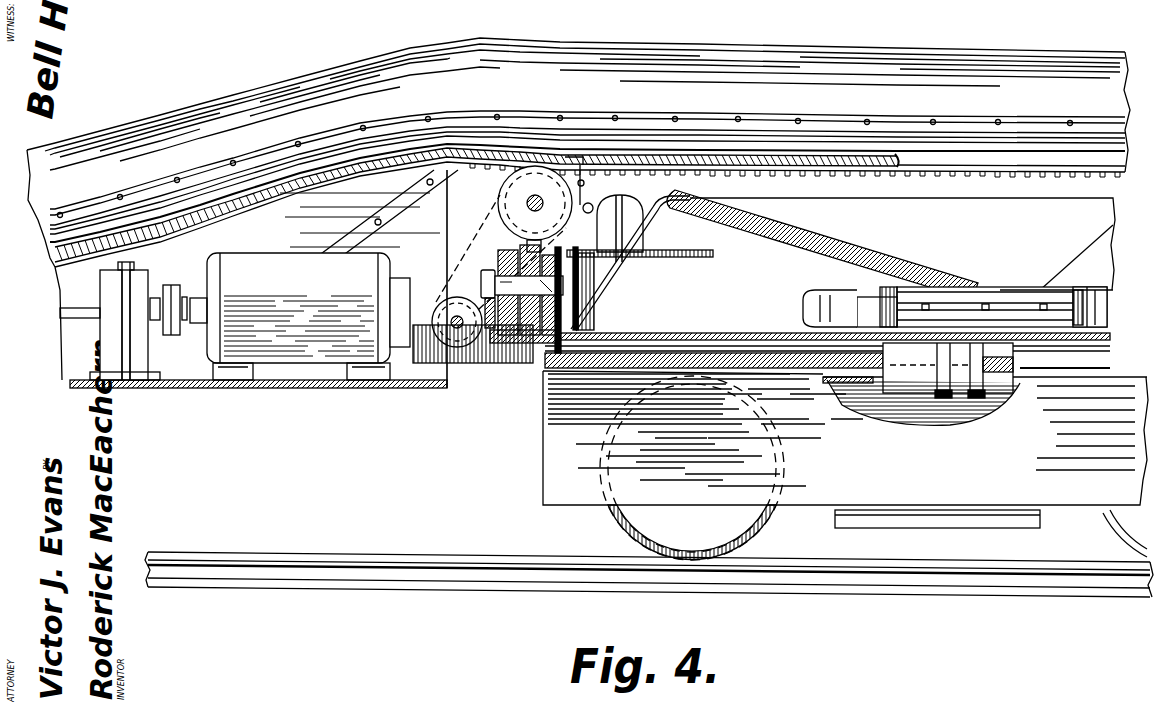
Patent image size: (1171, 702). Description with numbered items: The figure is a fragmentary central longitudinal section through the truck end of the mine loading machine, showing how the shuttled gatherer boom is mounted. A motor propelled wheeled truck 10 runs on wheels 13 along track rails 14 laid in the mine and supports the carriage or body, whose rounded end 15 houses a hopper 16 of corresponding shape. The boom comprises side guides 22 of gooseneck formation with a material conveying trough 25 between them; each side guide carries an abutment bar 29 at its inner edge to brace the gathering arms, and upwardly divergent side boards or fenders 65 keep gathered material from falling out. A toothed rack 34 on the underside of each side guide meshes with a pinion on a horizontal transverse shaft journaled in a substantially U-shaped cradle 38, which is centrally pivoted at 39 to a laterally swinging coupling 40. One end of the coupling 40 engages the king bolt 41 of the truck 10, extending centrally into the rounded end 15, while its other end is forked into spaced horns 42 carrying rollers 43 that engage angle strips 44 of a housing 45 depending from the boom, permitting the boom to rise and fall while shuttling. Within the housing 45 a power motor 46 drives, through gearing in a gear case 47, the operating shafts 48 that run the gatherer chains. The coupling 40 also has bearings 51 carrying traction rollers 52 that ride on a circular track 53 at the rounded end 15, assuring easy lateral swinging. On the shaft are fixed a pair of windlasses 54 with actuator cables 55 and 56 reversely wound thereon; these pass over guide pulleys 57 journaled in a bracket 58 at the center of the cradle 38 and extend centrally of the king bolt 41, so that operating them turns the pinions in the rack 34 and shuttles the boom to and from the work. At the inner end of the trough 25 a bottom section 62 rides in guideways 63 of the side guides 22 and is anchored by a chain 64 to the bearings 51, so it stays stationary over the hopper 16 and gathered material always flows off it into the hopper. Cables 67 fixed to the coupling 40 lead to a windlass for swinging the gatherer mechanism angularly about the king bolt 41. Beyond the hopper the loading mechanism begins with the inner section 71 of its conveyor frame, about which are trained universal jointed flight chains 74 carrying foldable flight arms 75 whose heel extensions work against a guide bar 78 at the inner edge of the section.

The wheeled truck 10 is at (545, 505).
The wheels 13 is at (765, 525).
The track rails 14 is at (335, 550).
The rounded end 15 is at (547, 353).
The hopper 16 is at (790, 200).
The side guides 22 is at (718, 128).
The material conveying trough 25 is at (140, 233).
The abutment bar 29 is at (605, 118).
The toothed rack 34 is at (908, 175).
The cradle 38 is at (527, 243).
The pivot 39 is at (487, 282).
The coupling 40 is at (667, 353).
The king bolt 41 is at (1015, 368).
The horns 42 is at (413, 362).
The rollers 43 is at (287, 382).
The angle strips 44 is at (365, 236).
The housing 45 is at (187, 388).
The power motor 46 is at (256, 265).
The gear case 47 is at (107, 288).
The operating shafts 48 is at (65, 318).
The bearings 51 is at (597, 233).
The traction rollers 52 is at (627, 205).
The circular track 53 is at (662, 252).
The windlasses 54 is at (498, 190).
The actuator cable 55 is at (1112, 340).
The actuator cable 56 is at (1103, 350).
The guide pulleys 57 is at (458, 340).
The bracket 58 is at (490, 330).
The bottom section 62 is at (378, 163).
The guideways 63 is at (918, 165).
The chain 64 is at (588, 200).
The side boards or fenders 65 is at (750, 52).
The cables 67 is at (560, 287).
The inner section 71 is at (1056, 284).
The flight chains 74 is at (893, 307).
The flight arms 75 is at (800, 303).
The guide bar 78 is at (967, 292).